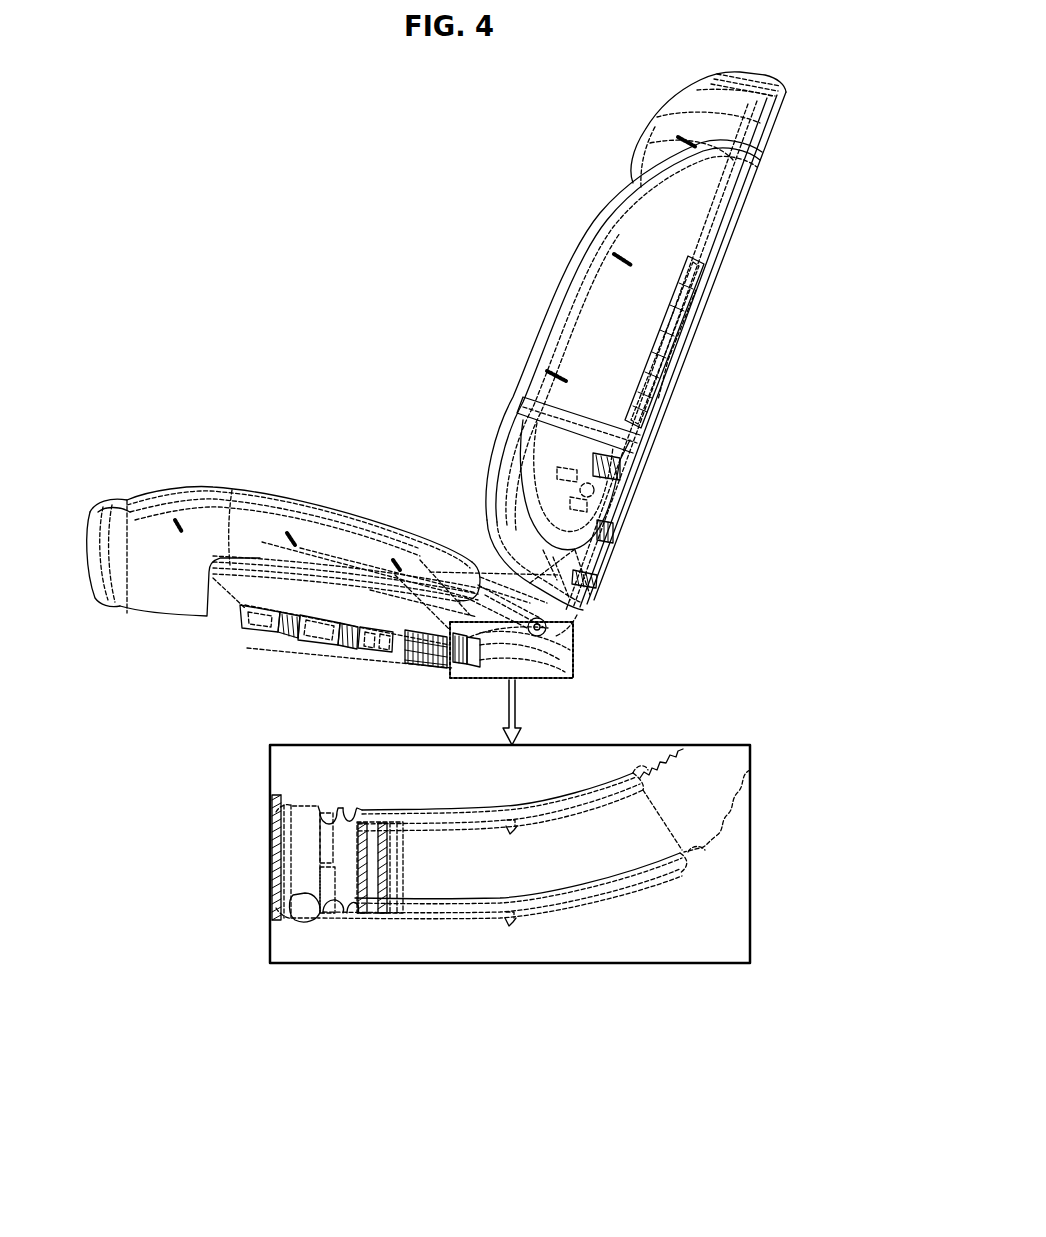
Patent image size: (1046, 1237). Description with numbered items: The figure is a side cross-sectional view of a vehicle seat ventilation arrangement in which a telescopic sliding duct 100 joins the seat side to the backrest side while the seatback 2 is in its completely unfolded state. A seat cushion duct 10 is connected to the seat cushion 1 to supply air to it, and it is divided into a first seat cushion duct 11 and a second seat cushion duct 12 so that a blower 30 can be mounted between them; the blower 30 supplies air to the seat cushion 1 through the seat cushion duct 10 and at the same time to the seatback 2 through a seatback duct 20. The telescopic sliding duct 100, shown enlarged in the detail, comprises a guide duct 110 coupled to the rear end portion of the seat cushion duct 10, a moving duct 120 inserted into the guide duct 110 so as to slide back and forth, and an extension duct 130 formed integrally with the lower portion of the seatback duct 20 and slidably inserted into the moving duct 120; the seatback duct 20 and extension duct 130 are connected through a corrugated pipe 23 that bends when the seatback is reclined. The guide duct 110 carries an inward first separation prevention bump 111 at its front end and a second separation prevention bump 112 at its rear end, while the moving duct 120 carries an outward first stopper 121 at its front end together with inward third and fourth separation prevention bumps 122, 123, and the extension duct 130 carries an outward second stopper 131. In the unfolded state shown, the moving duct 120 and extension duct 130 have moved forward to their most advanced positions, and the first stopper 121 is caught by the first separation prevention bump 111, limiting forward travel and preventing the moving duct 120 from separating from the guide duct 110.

The seat cushion 1 is at (260, 527).
The seatback 2 is at (636, 341).
The seat cushion duct 10 is at (291, 595).
The first seat cushion duct 11 is at (266, 615).
The second seat cushion duct 12 is at (400, 650).
The seatback duct 20 is at (613, 503).
The corrugated pipe 23 is at (577, 615).
The blower 30 is at (327, 615).
The telescopic sliding duct 100 is at (505, 871).
The guide duct 110 is at (402, 935).
The first separation prevention bump 111 is at (323, 812).
The second separation prevention bump 112 is at (632, 775).
The moving duct 120 is at (458, 935).
The first stopper 121 is at (329, 815).
The third separation prevention bump 122 is at (357, 823).
The fourth separation prevention bump 123 is at (513, 830).
The extension duct 130 is at (440, 905).
The second stopper 131 is at (387, 883).